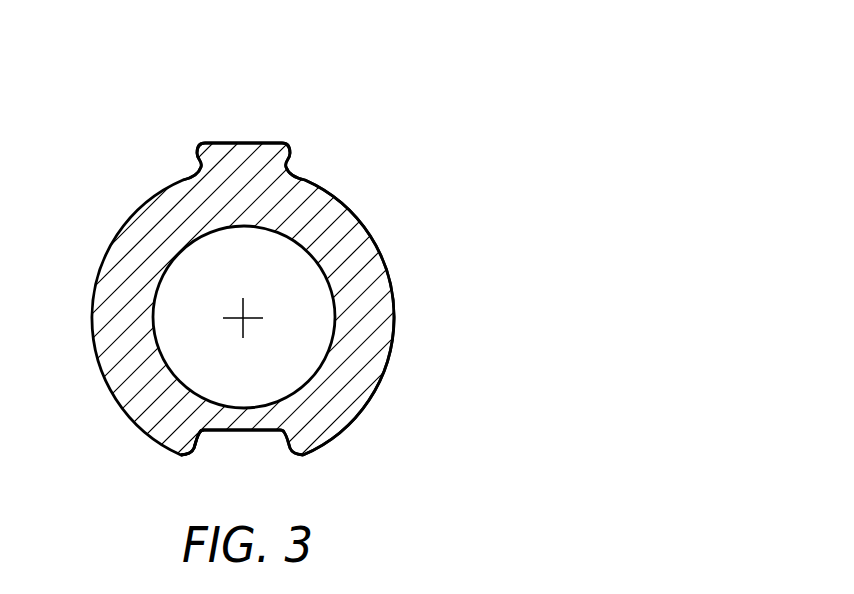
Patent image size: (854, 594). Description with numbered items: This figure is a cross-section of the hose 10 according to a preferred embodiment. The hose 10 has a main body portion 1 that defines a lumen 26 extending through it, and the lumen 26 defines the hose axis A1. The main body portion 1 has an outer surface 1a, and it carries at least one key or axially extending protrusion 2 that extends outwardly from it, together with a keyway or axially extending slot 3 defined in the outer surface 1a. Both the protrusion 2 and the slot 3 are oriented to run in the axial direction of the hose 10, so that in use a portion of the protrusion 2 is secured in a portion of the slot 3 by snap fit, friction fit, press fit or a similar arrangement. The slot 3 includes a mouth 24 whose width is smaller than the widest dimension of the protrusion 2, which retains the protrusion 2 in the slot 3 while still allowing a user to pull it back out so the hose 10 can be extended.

The hose 10 is at (472, 126).
The main body portion 1 is at (357, 250).
The outer surface 1a is at (397, 317).
The axially extending protrusion 2 is at (243, 142).
The axially extending slot 3 is at (243, 431).
The mouth 24 is at (197, 452).
The lumen 26 is at (197, 268).
The hose axis A1 is at (238, 321).